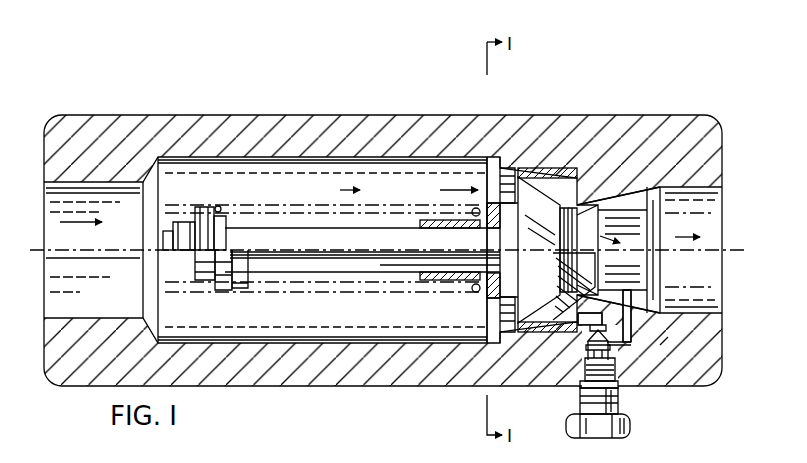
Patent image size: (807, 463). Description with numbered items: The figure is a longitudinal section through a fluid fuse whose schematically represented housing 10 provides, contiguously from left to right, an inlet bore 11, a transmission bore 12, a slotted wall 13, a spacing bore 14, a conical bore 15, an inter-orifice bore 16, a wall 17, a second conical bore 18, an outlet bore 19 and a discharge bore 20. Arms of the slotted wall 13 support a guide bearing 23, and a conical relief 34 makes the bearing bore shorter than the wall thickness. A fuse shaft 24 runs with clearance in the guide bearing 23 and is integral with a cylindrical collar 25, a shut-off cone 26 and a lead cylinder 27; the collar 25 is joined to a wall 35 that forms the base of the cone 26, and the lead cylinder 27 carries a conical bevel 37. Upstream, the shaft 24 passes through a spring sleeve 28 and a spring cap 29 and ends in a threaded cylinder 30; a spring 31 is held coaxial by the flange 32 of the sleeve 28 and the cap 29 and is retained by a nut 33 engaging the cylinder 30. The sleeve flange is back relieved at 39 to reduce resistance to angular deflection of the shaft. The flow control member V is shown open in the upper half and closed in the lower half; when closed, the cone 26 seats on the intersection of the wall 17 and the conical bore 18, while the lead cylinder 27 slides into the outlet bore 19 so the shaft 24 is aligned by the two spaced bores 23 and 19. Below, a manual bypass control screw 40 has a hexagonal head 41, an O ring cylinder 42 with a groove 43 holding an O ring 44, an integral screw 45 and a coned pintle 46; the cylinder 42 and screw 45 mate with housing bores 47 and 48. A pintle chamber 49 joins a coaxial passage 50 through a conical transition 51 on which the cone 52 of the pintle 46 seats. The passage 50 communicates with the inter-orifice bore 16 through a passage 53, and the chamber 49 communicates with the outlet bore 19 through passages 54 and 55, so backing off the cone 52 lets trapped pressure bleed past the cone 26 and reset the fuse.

The housing 10 is at (710, 390).
The inlet bore 11 is at (80, 188).
The transmission bore 12 is at (300, 166).
The slotted wall 13 is at (488, 195).
The spacing bore 14 is at (509, 168).
The conical bore 15 is at (548, 198).
The inter-orifice bore 16 is at (573, 210).
The wall 17 is at (588, 207).
The conical bore 18 is at (632, 222).
The outlet bore 19 is at (682, 190).
The discharge bore 20 is at (692, 316).
The guide bearing 23 is at (450, 274).
The fuse shaft 24 is at (252, 238).
The cylindrical collar 25 is at (493, 203).
The shut-off cone 26 is at (565, 210).
The lead cylinder 27 is at (616, 196).
The spring sleeve 28 is at (430, 214).
The spring cap 29 is at (206, 207).
The threaded cylinder 30 is at (169, 231).
The spring 31 is at (224, 216).
The flange 32 is at (466, 283).
The nut 33 is at (185, 222).
The conical relief 34 is at (493, 300).
The wall 35 is at (522, 180).
The conical bevel 37 is at (668, 232).
The back relief 39 is at (482, 290).
The manual bypass control screw 40 is at (612, 443).
The hexagonal head 41 is at (574, 426).
The O ring cylinder 42 is at (630, 426).
The groove 43 is at (618, 405).
The O ring 44 is at (581, 400).
The integral screw 45 is at (582, 384).
The coned pintle 46 is at (586, 360).
The bore 47 is at (620, 392).
The bore 48 is at (616, 378).
The pintle chamber 49 is at (616, 364).
The coaxial passage 50 is at (593, 348).
The conical transition 51 is at (612, 349).
The cone 52 is at (604, 320).
The passage 53 is at (598, 329).
The passage 54 is at (662, 346).
The passage 55 is at (634, 305).
The flow control member V is at (390, 222).